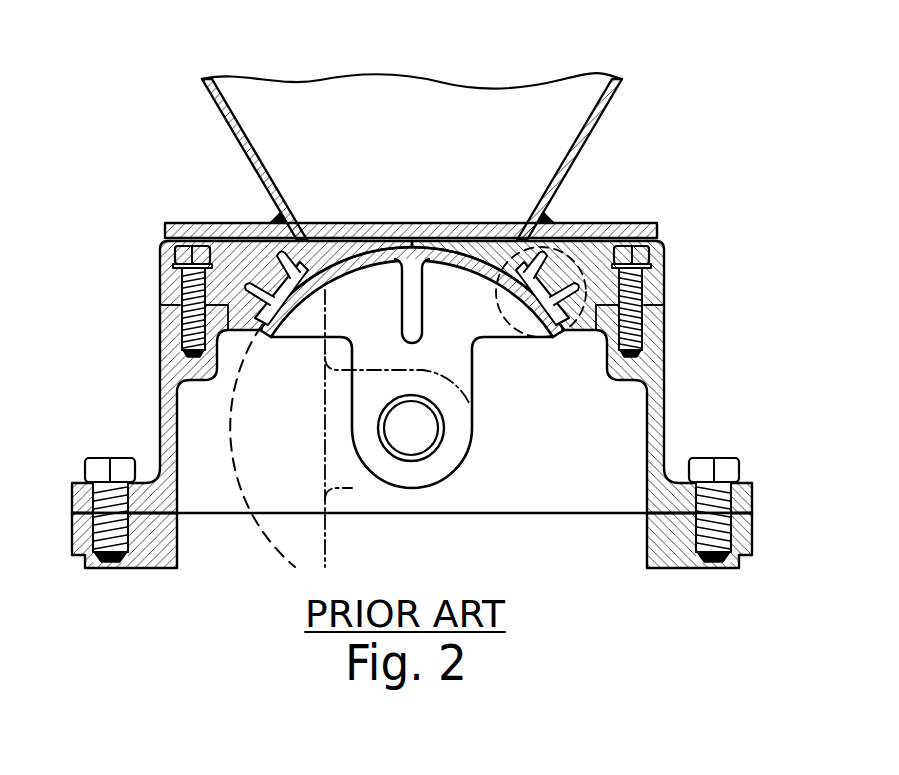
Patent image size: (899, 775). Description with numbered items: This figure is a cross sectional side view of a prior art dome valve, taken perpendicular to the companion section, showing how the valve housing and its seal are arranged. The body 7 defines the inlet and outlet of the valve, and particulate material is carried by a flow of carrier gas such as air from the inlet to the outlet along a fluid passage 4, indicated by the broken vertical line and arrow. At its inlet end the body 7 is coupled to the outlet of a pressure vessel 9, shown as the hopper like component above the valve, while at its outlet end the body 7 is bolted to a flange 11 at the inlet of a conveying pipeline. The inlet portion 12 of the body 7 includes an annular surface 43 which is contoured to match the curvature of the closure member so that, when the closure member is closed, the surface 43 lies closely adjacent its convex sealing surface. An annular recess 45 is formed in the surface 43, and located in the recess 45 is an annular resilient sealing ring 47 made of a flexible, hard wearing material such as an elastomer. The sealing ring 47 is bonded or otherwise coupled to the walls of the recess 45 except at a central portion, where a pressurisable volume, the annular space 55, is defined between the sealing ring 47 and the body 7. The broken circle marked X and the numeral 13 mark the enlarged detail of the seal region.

The fluid passage 4 is at (410, 202).
The pressure vessel 9 is at (604, 121).
The body 7 is at (680, 263).
The inlet portion 12 is at (667, 287).
The flange 11 is at (747, 530).
The annular surface 43 is at (283, 262).
The sealing ring 47 is at (249, 287).
The annular recess 45 is at (245, 318).
The sealing ring 13 is at (522, 262).
The annular space 55 is at (425, 428).
The detail X is at (513, 262).